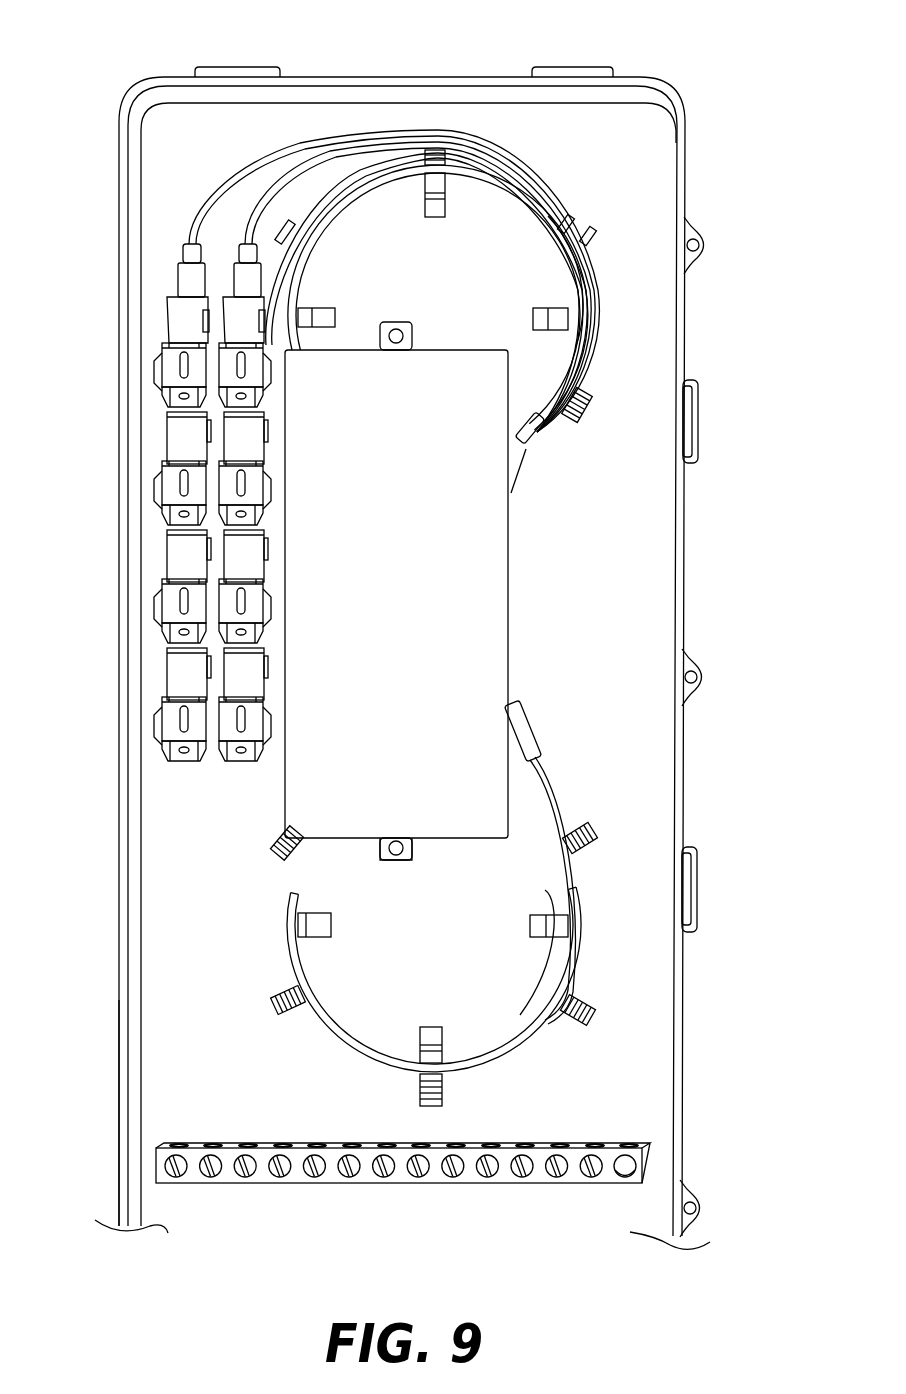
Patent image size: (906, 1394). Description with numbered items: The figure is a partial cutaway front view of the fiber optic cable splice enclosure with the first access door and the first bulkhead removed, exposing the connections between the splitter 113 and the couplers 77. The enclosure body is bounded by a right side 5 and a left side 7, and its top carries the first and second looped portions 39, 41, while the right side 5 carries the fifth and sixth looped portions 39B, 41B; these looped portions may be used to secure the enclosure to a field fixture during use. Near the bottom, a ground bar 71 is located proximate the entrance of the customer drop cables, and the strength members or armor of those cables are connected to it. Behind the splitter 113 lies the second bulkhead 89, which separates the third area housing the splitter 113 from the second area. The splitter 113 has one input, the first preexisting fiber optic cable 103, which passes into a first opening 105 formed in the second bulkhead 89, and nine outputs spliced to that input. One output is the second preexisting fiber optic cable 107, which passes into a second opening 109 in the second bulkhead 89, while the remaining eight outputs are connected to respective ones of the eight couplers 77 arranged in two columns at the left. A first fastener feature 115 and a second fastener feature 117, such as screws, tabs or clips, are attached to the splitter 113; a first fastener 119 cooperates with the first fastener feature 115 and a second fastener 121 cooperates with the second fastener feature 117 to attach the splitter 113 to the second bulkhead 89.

The right side 5 is at (675, 582).
The left side 7 is at (120, 855).
The first looped portion 39 is at (580, 67).
The second looped portion 41 is at (250, 67).
The fifth looped portion 39B is at (700, 423).
The sixth looped portion 41B is at (699, 885).
The ground bar 71 is at (540, 1150).
The couplers 77 is at (165, 370).
The second bulkhead 89 is at (571, 592).
The first preexisting fiber optic cable 103 is at (568, 800).
The first opening 105 is at (522, 1018).
The second preexisting fiber optic cable 107 is at (548, 332).
The second opening 109 is at (524, 236).
The splitter 113 is at (372, 533).
The first fastener feature 115 is at (383, 330).
The second fastener feature 117 is at (397, 865).
The first fastener 119 is at (398, 326).
The second fastener 121 is at (406, 850).